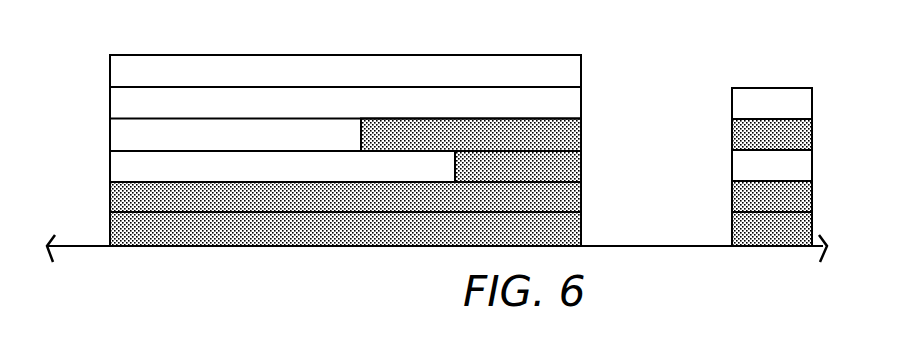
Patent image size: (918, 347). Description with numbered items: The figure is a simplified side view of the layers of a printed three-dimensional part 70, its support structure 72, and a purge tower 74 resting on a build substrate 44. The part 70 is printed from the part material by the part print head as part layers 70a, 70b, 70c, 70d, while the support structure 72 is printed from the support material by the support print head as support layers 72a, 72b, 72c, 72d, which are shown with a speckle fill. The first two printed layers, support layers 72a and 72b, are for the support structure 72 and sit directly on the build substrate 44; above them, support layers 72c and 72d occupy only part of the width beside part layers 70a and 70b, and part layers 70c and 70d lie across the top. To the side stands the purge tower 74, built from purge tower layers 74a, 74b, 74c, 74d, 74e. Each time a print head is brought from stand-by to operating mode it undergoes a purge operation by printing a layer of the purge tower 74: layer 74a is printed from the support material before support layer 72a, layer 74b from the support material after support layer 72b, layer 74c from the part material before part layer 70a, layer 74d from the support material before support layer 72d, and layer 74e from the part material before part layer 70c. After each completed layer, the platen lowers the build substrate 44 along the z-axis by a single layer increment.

The build substrate 44 is at (58, 246).
The 3D part 70 is at (590, 85).
The part layer 70a is at (126, 164).
The part layer 70b is at (126, 133).
The part layer 70c is at (128, 106).
The part layer 70d is at (128, 74).
The support structure 72 is at (105, 235).
The support layer 72a is at (574, 225).
The support layer 72b is at (574, 195).
The support layer 72c is at (570, 167).
The support layer 72d is at (568, 136).
The purge tower 74 is at (766, 70).
The purge tower layer 74a is at (742, 228).
The purge tower layer 74b is at (742, 198).
The purge tower layer 74c is at (742, 166).
The purge tower layer 74d is at (742, 137).
The purge tower layer 74e is at (742, 106).